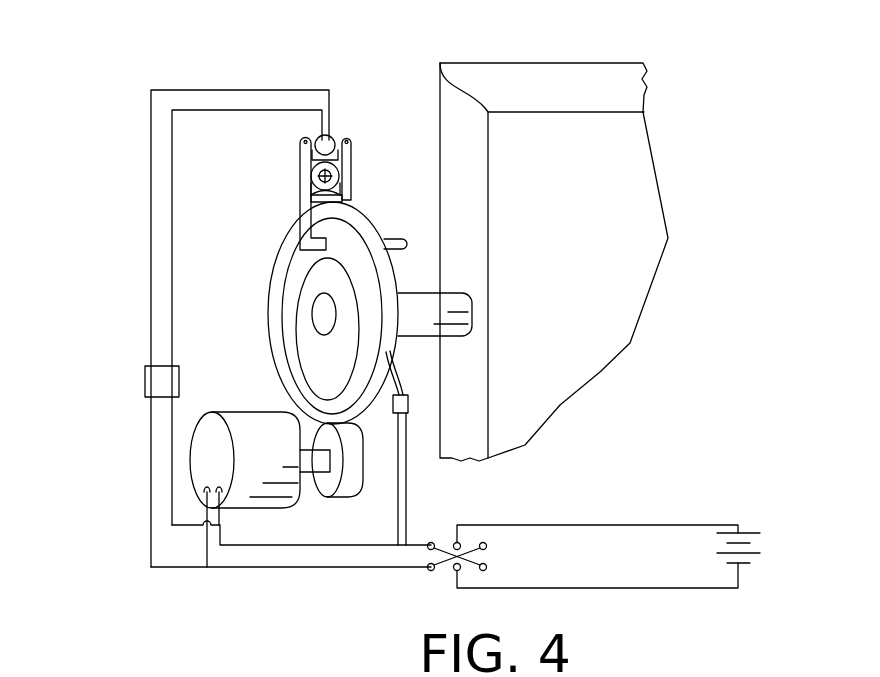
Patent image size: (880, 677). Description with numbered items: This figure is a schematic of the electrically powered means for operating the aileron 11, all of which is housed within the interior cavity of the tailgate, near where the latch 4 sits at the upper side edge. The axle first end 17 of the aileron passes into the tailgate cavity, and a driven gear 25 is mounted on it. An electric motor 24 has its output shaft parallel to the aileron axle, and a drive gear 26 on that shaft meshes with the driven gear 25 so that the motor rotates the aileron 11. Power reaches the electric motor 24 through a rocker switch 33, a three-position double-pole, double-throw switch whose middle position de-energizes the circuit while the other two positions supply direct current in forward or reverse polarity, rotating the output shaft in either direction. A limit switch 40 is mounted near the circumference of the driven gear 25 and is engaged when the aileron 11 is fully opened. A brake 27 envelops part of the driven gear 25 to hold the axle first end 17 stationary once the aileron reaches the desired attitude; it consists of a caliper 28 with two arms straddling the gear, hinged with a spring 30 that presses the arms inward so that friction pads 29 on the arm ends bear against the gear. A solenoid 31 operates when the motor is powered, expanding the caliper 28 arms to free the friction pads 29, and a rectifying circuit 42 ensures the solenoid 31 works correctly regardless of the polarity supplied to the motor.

The latch 4 is at (405, 243).
The aileron 11 is at (570, 291).
The axle first end 17 is at (445, 305).
The electric motor 24 is at (252, 450).
The driven gear 25 is at (388, 357).
The drive gear 26 is at (352, 477).
The brake 27 is at (353, 118).
The caliper 28 is at (305, 200).
The friction pads 29 is at (310, 243).
The spring 30 is at (332, 177).
The solenoid 31 is at (322, 145).
The rocker switch 33 is at (437, 577).
The limit switch 40 is at (408, 403).
The rectifying circuit 42 is at (160, 380).